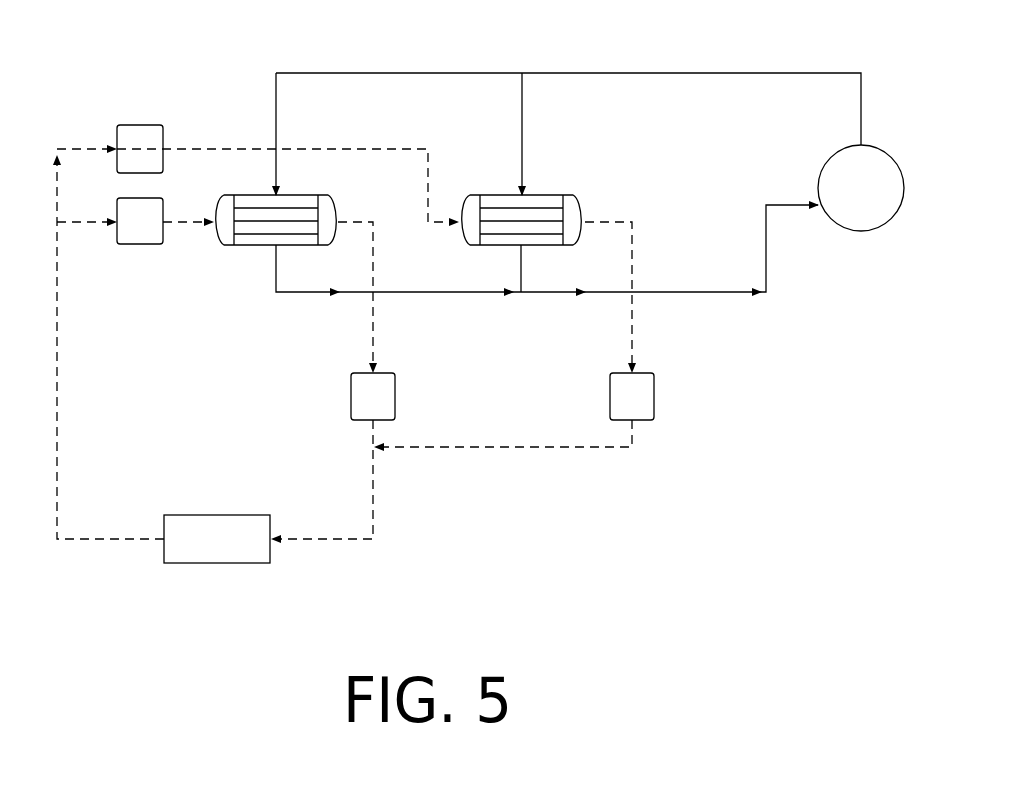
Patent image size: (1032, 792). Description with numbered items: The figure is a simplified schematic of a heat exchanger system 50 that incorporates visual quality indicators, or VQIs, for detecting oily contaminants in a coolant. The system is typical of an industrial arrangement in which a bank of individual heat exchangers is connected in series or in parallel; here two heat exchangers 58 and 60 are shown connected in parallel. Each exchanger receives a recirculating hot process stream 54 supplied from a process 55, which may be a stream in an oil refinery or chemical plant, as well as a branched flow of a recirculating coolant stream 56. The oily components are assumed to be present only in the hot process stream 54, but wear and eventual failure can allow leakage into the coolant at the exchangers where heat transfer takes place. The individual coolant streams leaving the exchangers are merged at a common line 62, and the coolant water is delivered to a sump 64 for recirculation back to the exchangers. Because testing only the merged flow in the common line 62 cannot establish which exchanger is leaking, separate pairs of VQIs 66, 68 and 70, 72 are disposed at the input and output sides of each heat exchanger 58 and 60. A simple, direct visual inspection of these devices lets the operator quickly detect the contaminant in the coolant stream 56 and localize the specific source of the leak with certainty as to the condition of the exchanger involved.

The heat exchanger system 50 is at (762, 466).
The hot process stream 54 is at (831, 72).
The process 55 is at (822, 170).
The coolant stream 56 is at (58, 416).
The heat exchanger 58 is at (233, 246).
The heat exchanger 60 is at (483, 246).
The common line 62 is at (372, 490).
The sump 64 is at (201, 515).
The visual quality indicator 66 is at (135, 244).
The visual quality indicator 68 is at (351, 390).
The visual quality indicator 70 is at (152, 125).
The visual quality indicator 72 is at (610, 390).